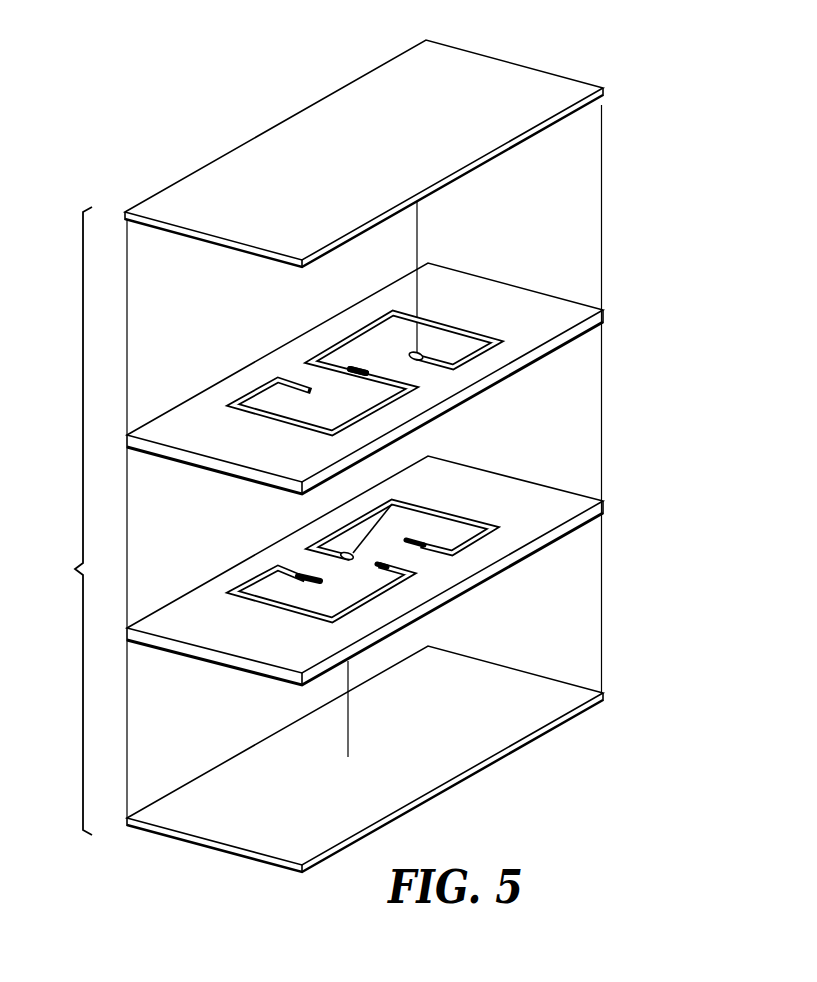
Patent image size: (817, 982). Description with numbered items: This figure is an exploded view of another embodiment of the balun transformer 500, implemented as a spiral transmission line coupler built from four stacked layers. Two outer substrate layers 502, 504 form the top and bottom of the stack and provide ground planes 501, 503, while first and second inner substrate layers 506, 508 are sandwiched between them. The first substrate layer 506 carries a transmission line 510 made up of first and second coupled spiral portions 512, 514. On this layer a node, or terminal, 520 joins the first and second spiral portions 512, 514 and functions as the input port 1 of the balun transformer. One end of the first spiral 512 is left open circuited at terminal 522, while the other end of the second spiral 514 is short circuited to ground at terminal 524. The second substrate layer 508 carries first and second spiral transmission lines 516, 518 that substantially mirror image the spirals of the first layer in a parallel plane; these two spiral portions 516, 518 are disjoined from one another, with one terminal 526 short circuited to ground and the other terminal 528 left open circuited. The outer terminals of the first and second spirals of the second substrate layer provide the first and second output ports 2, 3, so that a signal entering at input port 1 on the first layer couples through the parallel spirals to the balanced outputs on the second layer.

The balun transformer 500 is at (771, 745).
The ground plane 501 is at (522, 80).
The outer substrate layer 502 is at (608, 86).
The ground plane 503 is at (528, 752).
The outer substrate layer 504 is at (608, 691).
The first inner substrate layer 506 is at (608, 309).
The second inner substrate layer 508 is at (606, 501).
The transmission line 510 is at (460, 330).
The first coupled spiral portion 512 is at (258, 348).
The second coupled spiral portion 514 is at (360, 288).
The first spiral transmission line 516 is at (275, 607).
The second spiral transmission line 518 is at (470, 515).
The node 520 is at (357, 367).
The open circuited terminal 522 is at (310, 392).
The short circuited terminal 524 is at (421, 352).
The short circuited terminal 526 is at (351, 553).
The open circuited terminal 528 is at (405, 567).
The input port 1 is at (368, 359).
The first output port 2 is at (320, 581).
The second output port 3 is at (405, 538).